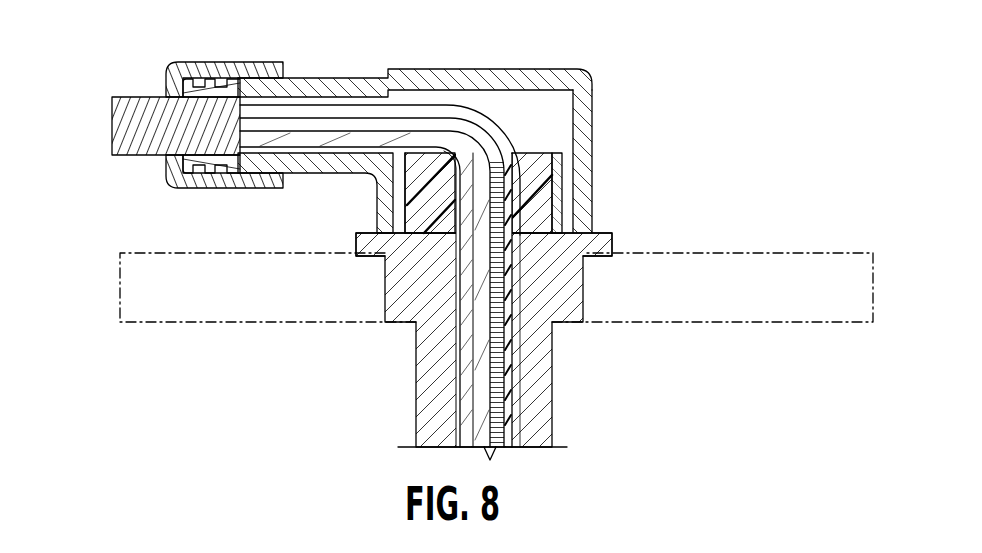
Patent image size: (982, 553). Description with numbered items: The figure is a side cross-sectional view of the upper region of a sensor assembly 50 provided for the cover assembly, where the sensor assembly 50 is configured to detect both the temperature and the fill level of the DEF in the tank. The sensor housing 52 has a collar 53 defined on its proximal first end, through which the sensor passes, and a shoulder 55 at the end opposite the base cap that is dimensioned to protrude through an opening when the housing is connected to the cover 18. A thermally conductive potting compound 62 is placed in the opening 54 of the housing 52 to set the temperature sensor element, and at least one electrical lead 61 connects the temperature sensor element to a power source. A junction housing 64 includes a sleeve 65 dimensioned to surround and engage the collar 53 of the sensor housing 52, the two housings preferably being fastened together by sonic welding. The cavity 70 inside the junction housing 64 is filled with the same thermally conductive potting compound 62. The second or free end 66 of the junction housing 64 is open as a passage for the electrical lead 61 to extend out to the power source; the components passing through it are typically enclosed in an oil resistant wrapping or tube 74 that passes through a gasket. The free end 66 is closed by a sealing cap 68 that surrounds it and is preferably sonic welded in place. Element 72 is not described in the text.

The cover 18 is at (849, 304).
The sensor assembly 50 is at (368, 230).
The sensor housing 52 is at (446, 346).
The collar 53 is at (377, 180).
The opening 54 is at (510, 380).
The shoulder 55 is at (363, 242).
The electrical lead 61 is at (463, 408).
The thermally conductive potting compound 62 is at (533, 218).
The junction housing 64 is at (412, 48).
The sleeve 65 is at (585, 178).
The free end 66 is at (265, 83).
The sealing cap 68 is at (190, 134).
The cavity 70 is at (525, 118).
The ferrule seal 72 is at (183, 88).
The tube 74 is at (125, 128).